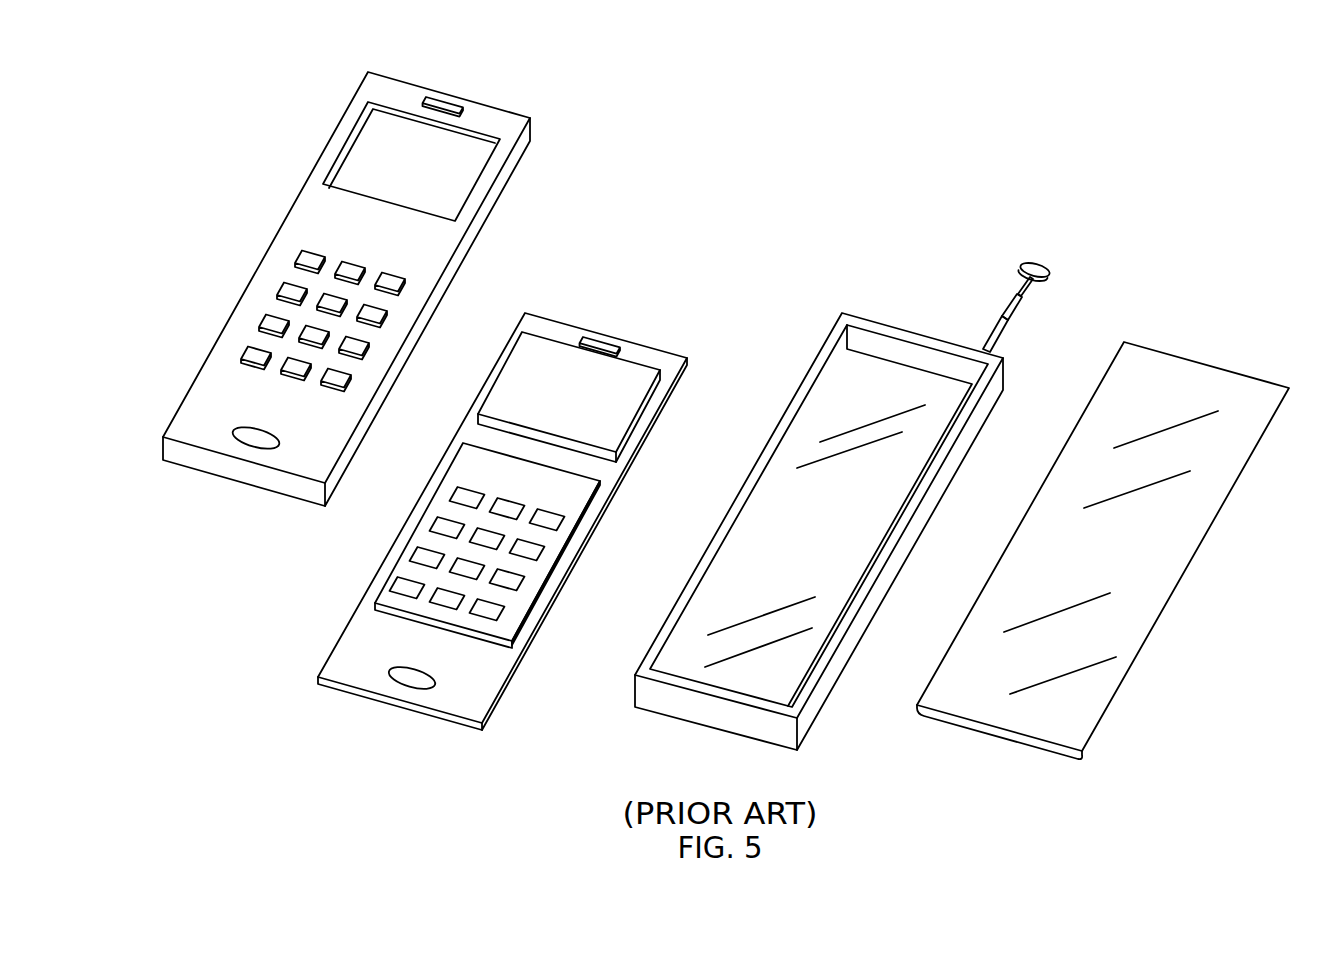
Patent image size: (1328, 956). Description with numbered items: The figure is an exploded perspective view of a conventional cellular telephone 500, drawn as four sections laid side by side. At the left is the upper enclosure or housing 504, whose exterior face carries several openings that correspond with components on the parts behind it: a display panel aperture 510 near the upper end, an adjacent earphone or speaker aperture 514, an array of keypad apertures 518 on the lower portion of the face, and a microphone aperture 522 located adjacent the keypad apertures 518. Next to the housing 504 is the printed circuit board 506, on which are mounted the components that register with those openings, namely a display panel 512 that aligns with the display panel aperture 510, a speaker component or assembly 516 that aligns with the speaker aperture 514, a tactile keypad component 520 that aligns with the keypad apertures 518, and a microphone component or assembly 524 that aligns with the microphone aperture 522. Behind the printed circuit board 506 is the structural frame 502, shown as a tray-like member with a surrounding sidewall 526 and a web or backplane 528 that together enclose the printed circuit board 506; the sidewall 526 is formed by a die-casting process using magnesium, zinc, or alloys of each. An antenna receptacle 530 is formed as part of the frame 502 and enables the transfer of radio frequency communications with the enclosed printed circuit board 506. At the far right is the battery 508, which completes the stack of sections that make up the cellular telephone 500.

The cellular telephone 500 is at (1175, 132).
The frame 502 is at (912, 258).
The housing 504 is at (297, 132).
The printed circuit board 506 is at (614, 258).
The battery 508 is at (1203, 317).
The display panel aperture 510 is at (488, 138).
The display panel 512 is at (633, 368).
The speaker aperture 514 is at (453, 100).
The speaker component 516 is at (588, 330).
The keypad apertures 518 is at (285, 292).
The tactile keypad component 520 is at (405, 572).
The microphone aperture 522 is at (252, 450).
The microphone component 524 is at (405, 684).
The sidewall 526 is at (690, 717).
The backplane 528 is at (799, 666).
The antenna receptacle 530 is at (990, 333).